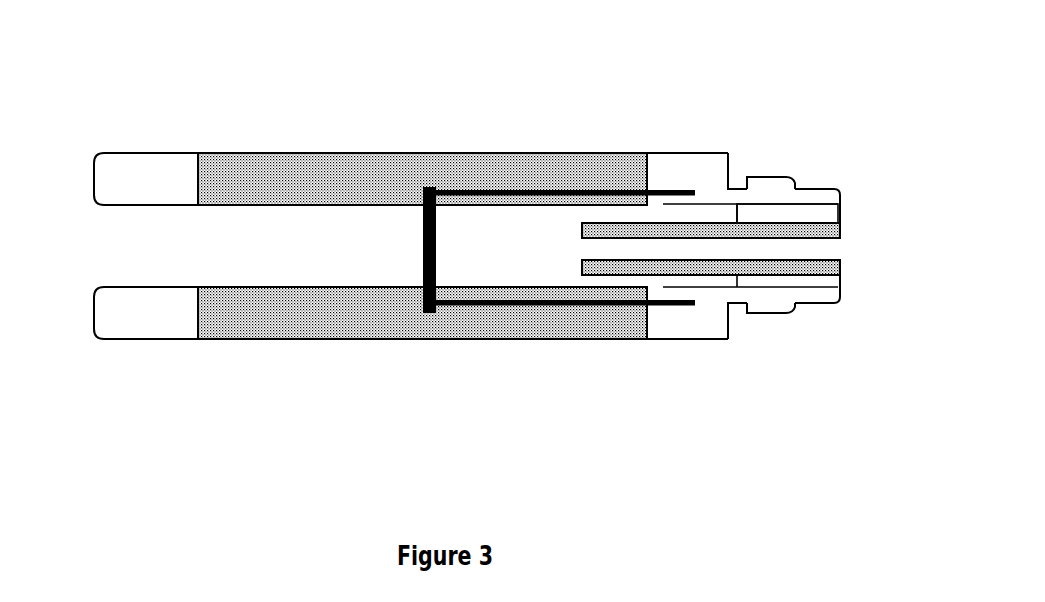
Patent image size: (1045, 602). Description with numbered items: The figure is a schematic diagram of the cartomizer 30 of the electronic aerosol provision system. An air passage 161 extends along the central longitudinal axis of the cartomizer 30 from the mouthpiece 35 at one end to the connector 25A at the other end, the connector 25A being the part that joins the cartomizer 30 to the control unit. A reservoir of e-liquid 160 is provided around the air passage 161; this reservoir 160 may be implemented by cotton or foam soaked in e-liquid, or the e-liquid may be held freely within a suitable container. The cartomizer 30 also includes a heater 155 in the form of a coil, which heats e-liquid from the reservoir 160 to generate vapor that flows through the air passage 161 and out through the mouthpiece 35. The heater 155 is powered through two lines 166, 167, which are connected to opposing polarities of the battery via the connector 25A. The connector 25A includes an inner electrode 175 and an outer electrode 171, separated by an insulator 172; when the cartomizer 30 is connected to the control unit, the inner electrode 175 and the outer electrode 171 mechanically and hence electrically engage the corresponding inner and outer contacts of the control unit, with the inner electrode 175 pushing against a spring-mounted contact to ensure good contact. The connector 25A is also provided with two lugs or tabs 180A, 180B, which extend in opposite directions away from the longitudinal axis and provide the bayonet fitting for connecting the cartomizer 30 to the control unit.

The connector 25A is at (832, 317).
The cartomizer 30 is at (292, 353).
The mouthpiece 35 is at (105, 358).
The heater 155 is at (420, 210).
The reservoir of e-liquid 160 is at (313, 178).
The air passage 161 is at (256, 245).
The line 166 is at (566, 190).
The line 167 is at (526, 303).
The outer electrode 171 is at (805, 197).
The insulator 172 is at (822, 212).
The inner electrode 175 is at (796, 267).
The lug or tab 180A is at (768, 188).
The lug or tab 180B is at (768, 305).